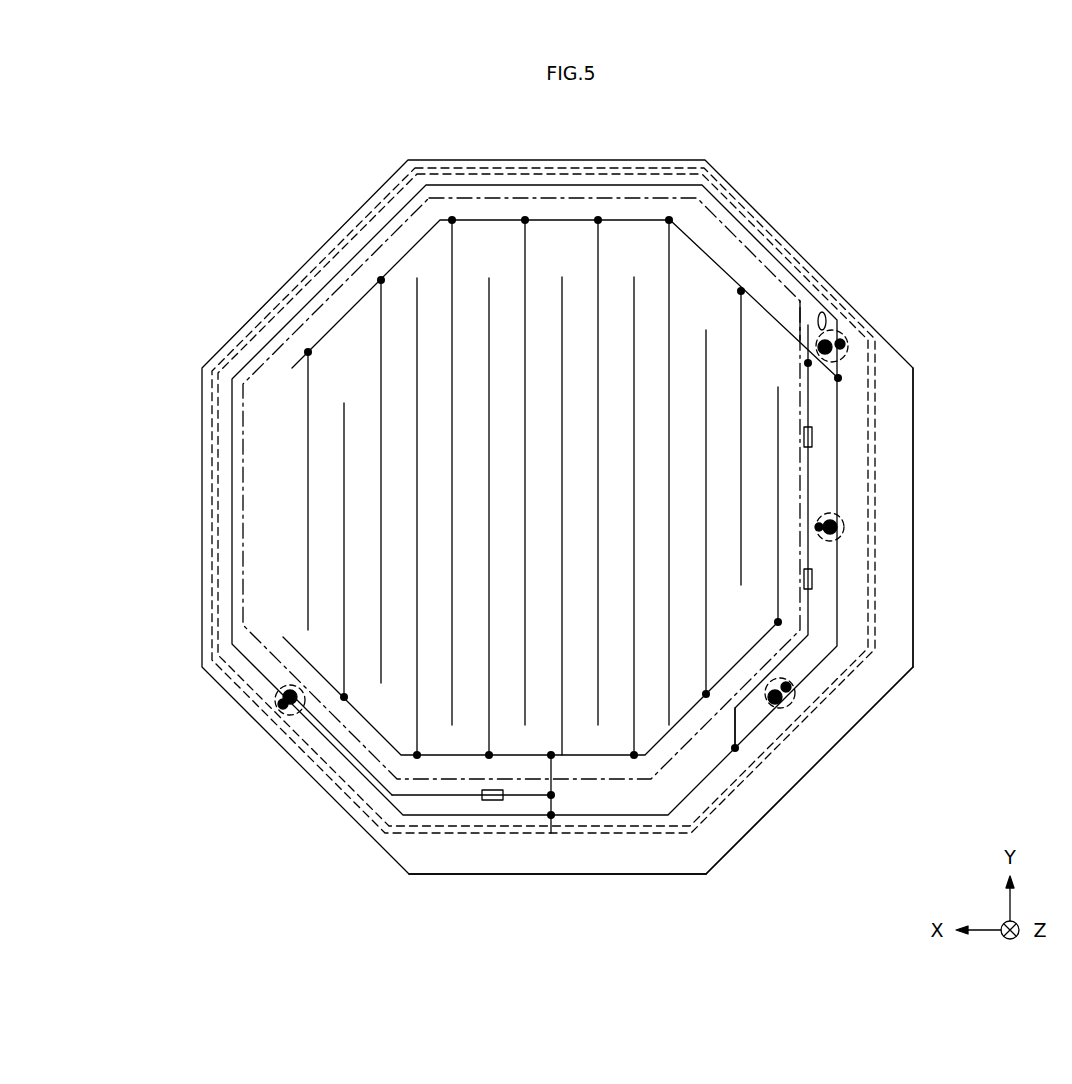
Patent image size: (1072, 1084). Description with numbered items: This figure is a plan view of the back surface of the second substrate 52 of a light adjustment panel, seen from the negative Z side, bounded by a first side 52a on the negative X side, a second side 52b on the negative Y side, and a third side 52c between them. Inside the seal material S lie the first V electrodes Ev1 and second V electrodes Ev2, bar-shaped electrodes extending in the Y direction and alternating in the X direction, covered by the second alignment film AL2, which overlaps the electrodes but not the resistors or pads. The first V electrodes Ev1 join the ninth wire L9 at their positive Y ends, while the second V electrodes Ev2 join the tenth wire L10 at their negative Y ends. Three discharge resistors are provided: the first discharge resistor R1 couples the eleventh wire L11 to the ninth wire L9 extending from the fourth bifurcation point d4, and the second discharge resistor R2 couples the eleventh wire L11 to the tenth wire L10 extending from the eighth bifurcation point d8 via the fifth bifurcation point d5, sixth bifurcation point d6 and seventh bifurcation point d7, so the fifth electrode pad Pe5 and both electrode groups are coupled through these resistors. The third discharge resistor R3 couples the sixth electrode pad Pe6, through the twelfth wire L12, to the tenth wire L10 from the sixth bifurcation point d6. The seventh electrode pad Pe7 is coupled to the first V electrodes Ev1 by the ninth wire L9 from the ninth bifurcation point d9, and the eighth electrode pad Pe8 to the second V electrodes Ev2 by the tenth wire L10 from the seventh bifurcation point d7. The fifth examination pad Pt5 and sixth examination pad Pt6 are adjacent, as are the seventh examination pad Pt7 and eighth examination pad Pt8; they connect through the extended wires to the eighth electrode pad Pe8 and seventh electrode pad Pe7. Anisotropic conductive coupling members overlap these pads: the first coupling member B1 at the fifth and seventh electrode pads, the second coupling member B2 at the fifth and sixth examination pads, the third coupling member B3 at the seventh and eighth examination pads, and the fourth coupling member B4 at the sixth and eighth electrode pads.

The second substrate 52 is at (684, 158).
The first side 52a is at (914, 630).
The second side 52b is at (664, 875).
The third side 52c is at (722, 860).
The seal material S is at (212, 402).
The second alignment film AL2 is at (242, 442).
The ninth wire L9 is at (630, 218).
The tenth wire L10 is at (368, 764).
The eleventh wire L11 is at (812, 460).
The twelfth wire L12 is at (416, 797).
The first V electrode Ev1 is at (598, 270).
The second V electrode Ev2 is at (489, 549).
The first discharge resistor R1 is at (815, 436).
The second discharge resistor R2 is at (815, 578).
The third discharge resistor R3 is at (492, 802).
The fifth examination pad Pt5 is at (824, 312).
The sixth examination pad Pt6 is at (842, 340).
The seventh examination pad Pt7 is at (790, 706).
The eighth examination pad Pt8 is at (790, 690).
The fifth electrode pad Pe5 is at (836, 520).
The sixth electrode pad Pe6 is at (281, 690).
The seventh electrode pad Pe7 is at (824, 527).
The eighth electrode pad Pe8 is at (286, 706).
The first coupling member B1 is at (846, 532).
The second coupling member B2 is at (850, 350).
The third coupling member B3 is at (790, 733).
The fourth coupling member B4 is at (283, 705).
The fourth bifurcation point d4 is at (805, 335).
The fifth bifurcation point d5 is at (553, 760).
The sixth bifurcation point d6 is at (553, 800).
The seventh bifurcation point d7 is at (552, 826).
The eighth bifurcation point d8 is at (740, 745).
The ninth bifurcation point d9 is at (843, 384).